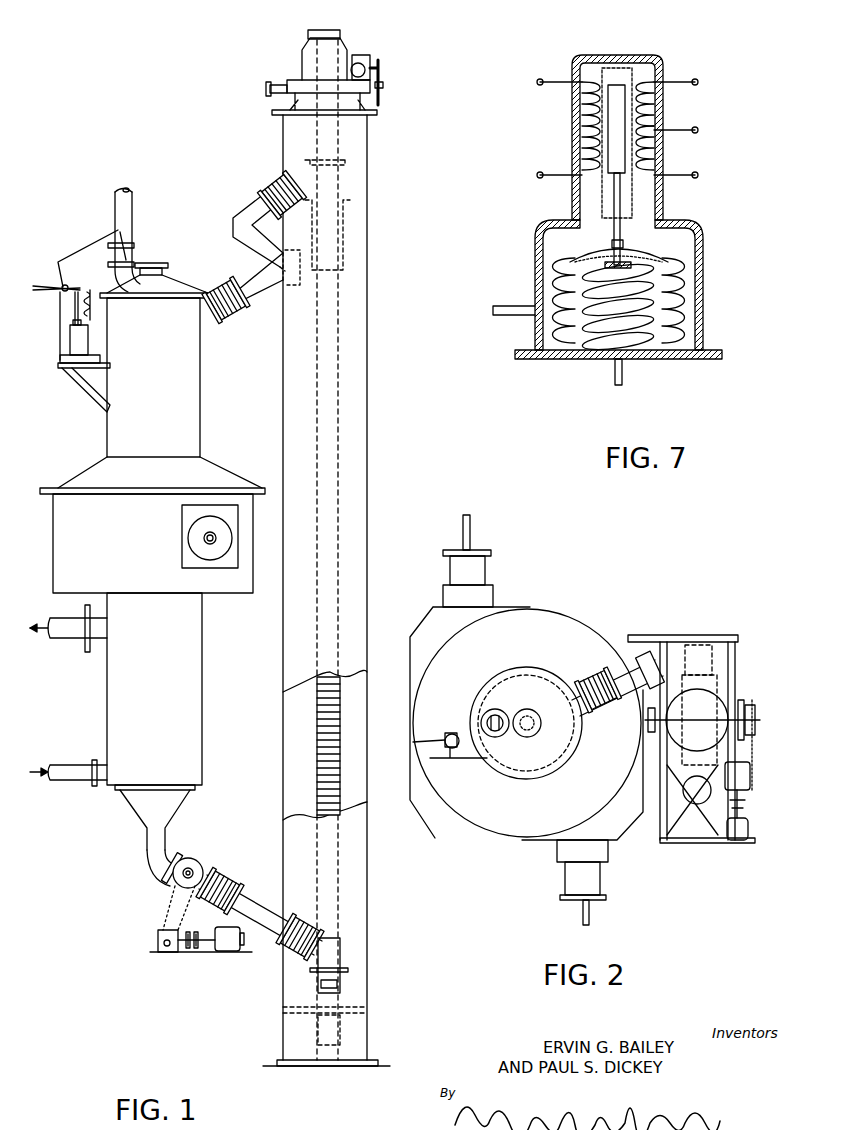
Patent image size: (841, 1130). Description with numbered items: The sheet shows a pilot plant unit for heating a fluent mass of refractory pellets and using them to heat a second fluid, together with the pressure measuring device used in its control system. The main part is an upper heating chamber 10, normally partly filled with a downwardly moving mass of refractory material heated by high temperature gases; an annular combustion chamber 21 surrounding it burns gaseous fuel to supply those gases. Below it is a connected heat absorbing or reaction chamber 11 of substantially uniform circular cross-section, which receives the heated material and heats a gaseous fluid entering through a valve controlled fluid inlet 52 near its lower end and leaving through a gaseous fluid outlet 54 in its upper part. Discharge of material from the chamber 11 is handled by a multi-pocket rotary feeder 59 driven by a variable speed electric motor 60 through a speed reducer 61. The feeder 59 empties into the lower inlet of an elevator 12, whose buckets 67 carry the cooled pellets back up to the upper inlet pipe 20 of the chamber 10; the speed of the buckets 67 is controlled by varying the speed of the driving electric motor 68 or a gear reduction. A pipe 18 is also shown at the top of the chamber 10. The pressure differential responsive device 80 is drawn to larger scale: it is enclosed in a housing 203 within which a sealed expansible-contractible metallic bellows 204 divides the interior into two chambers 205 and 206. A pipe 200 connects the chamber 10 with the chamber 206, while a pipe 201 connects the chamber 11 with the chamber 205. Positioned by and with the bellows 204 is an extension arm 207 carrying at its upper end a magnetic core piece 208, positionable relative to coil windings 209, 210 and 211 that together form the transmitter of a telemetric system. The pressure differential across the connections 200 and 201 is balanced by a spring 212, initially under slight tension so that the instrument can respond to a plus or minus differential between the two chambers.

In FIG. 1, the upper heating chamber 10 is at (162, 373).
In FIG. 2, the upper heating chamber 10 is at (527, 665).
In FIG. 1, the heat absorbing or reaction chamber 11 is at (164, 696).
In FIG. 1, the elevator 12 is at (367, 470).
In FIG. 1, the fuel supply pipe 18 is at (134, 208).
In FIG. 2, the fuel supply pipe 18 is at (500, 710).
In FIG. 1, the upper inlet pipe 20 is at (214, 320).
In FIG. 2, the upper inlet pipe 20 is at (578, 690).
In FIG. 1, the annular combustion chamber 21 is at (152, 551).
In FIG. 2, the annular combustion chamber 21 is at (560, 615).
In FIG. 1, the valve controlled fluid inlet 52 is at (65, 782).
In FIG. 1, the gaseous fluid outlet 54 is at (62, 640).
In FIG. 1, the multi-pocket rotary feeder 59 is at (190, 858).
In FIG. 1, the variable speed electric motor 60 is at (228, 953).
In FIG. 1, the speed reducer 61 is at (172, 955).
In FIG. 1, the buckets 67 is at (317, 742).
In FIG. 2, the buckets 67 is at (710, 690).
In FIG. 2, the driving electric motor 68 is at (748, 843).
In FIG. 7, the pressure differential responsive device 80 is at (744, 275).
In FIG. 7, the pipe 200 is at (508, 318).
In FIG. 7, the pipe 201 is at (612, 385).
In FIG. 7, the housing 203 is at (555, 226).
In FIG. 7, the expansible-contractible metallic bellows 204 is at (690, 320).
In FIG. 7, the chamber 205 is at (572, 282).
In FIG. 7, the chamber 206 is at (612, 249).
In FIG. 7, the extension arm 207 is at (620, 205).
In FIG. 7, the magnetic core piece 208 is at (615, 85).
In FIG. 7, the coil winding 209 is at (590, 128).
In FIG. 7, the coil winding 210 is at (662, 112).
In FIG. 7, the coil winding 211 is at (662, 160).
In FIG. 7, the spring 212 is at (628, 345).